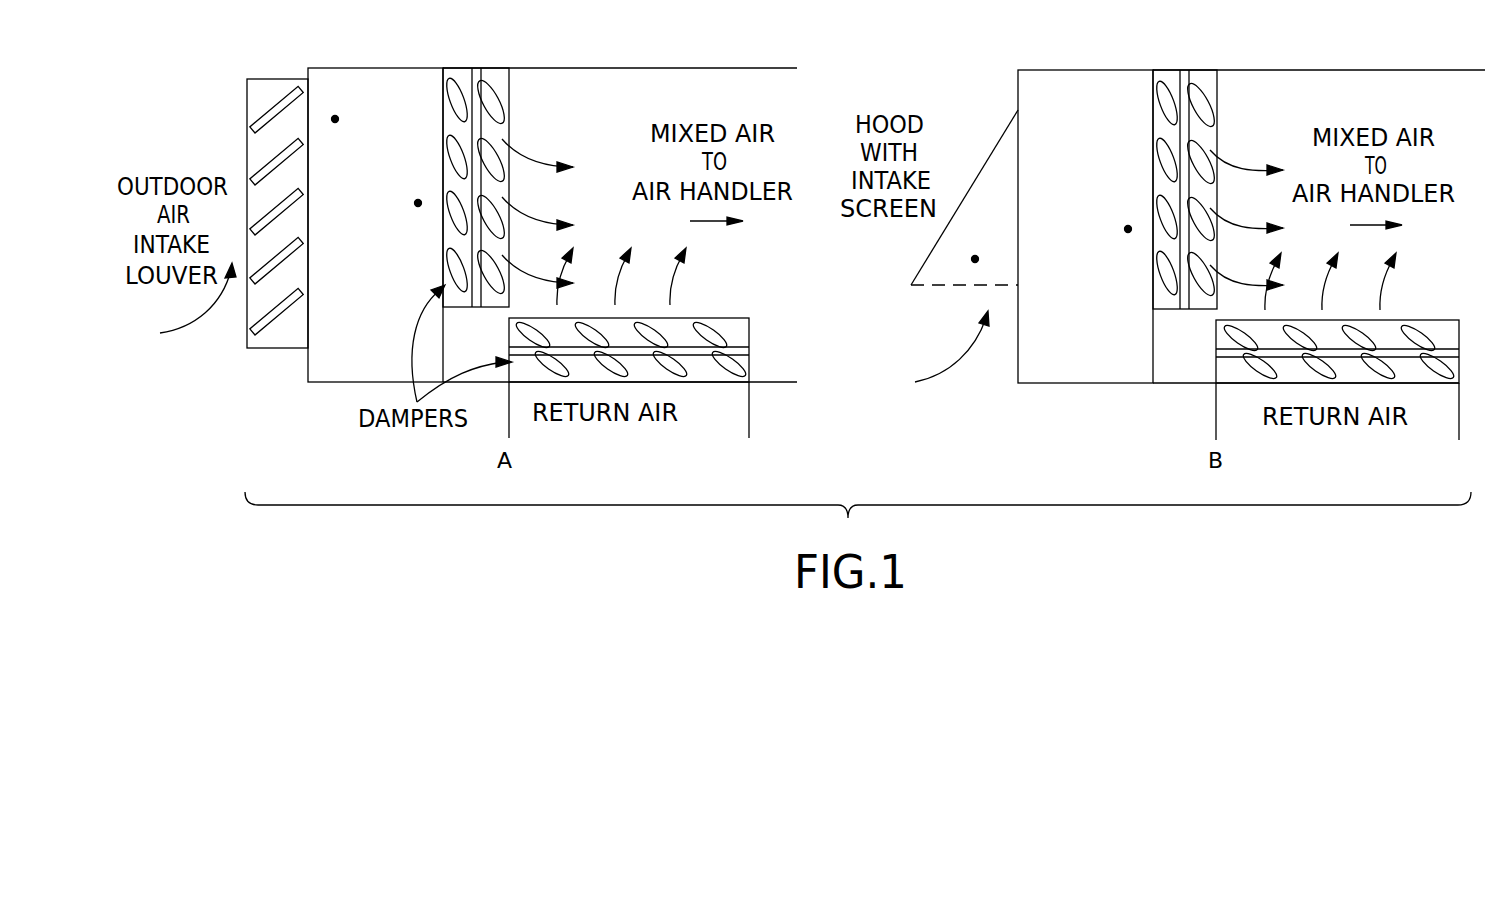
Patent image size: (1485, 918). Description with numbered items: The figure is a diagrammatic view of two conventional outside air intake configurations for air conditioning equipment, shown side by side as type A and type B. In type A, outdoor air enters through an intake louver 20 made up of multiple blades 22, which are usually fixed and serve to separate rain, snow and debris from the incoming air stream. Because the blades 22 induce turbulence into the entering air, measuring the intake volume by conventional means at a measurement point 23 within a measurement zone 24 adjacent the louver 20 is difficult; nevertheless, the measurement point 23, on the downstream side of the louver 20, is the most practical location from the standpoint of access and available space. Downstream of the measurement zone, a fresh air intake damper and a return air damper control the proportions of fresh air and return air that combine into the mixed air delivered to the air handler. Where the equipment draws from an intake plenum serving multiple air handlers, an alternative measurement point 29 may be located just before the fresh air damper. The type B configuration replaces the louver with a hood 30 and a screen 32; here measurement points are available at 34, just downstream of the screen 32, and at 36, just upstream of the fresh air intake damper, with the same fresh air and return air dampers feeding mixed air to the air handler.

The intake louver 20 is at (249, 230).
The blades 22 is at (262, 167).
The measurement point 23 is at (335, 119).
The measurement zone 24 is at (395, 251).
The measurement point 29 is at (418, 203).
The hood 30 is at (944, 218).
The screen 32 is at (930, 286).
The measurement point 34 is at (975, 259).
The measurement point 36 is at (1128, 229).